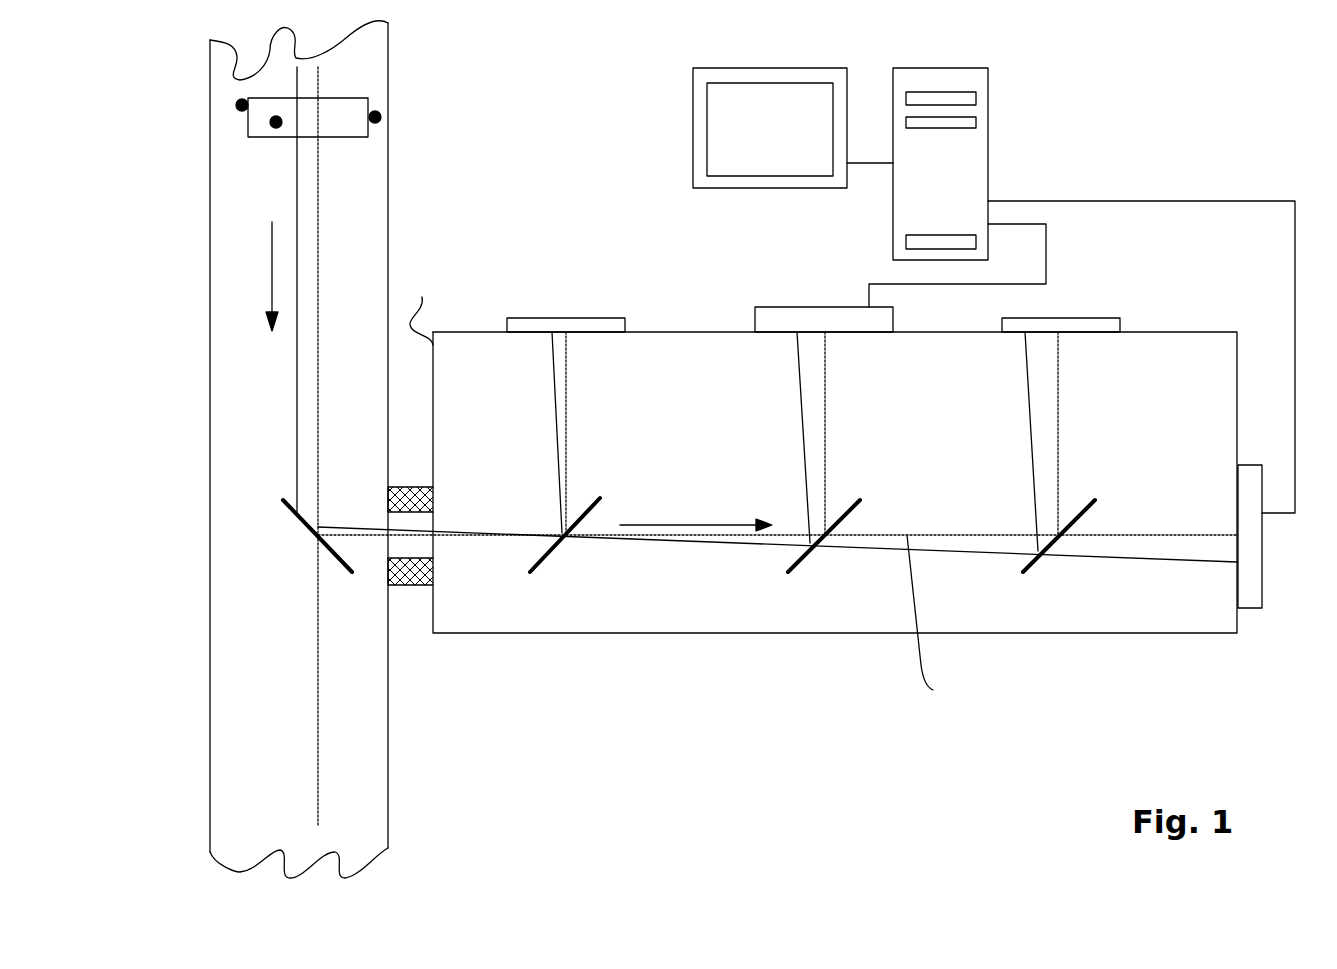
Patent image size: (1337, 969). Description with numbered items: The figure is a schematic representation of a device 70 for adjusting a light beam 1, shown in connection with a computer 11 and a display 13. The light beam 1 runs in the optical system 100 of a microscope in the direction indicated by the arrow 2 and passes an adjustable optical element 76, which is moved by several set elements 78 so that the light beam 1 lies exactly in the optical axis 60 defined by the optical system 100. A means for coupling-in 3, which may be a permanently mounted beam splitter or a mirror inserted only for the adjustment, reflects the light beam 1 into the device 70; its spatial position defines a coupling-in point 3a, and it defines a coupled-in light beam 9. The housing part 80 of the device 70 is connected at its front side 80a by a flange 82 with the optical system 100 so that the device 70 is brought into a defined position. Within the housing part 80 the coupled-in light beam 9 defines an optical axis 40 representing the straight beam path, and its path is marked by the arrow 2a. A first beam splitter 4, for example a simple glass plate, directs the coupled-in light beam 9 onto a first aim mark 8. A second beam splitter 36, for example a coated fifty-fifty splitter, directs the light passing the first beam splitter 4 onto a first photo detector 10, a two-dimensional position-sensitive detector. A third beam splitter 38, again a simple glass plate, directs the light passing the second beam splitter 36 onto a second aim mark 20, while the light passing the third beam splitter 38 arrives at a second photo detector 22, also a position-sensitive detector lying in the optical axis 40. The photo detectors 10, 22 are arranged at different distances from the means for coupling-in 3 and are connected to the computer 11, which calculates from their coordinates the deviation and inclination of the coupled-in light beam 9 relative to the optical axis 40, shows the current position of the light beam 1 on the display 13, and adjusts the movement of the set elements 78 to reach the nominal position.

The light beam 1 is at (297, 368).
The arrow 2 is at (253, 286).
The arrow 2a is at (670, 525).
The means for coupling-in 3 is at (318, 528).
The coupling-in point 3a is at (330, 525).
The first beam splitter 4 is at (545, 558).
The first aim mark 8 is at (602, 318).
The coupled-in light beam 9 is at (494, 532).
The first photo detector 10 is at (800, 320).
The computer 11 is at (955, 155).
The display 13 is at (715, 124).
The second aim mark 20 is at (1098, 318).
The second photo detector 22 is at (1250, 583).
The second beam splitter 36 is at (800, 558).
The third beam splitter 38 is at (1040, 563).
The optical axis 40 is at (935, 619).
The optical axis 60 is at (318, 173).
The device 70 is at (1116, 656).
The optical element 76 is at (345, 108).
The set elements 78 is at (377, 117).
The housing part 80 is at (802, 633).
The front side 80a is at (431, 309).
The flange 82 is at (413, 585).
The optical system 100 is at (377, 173).